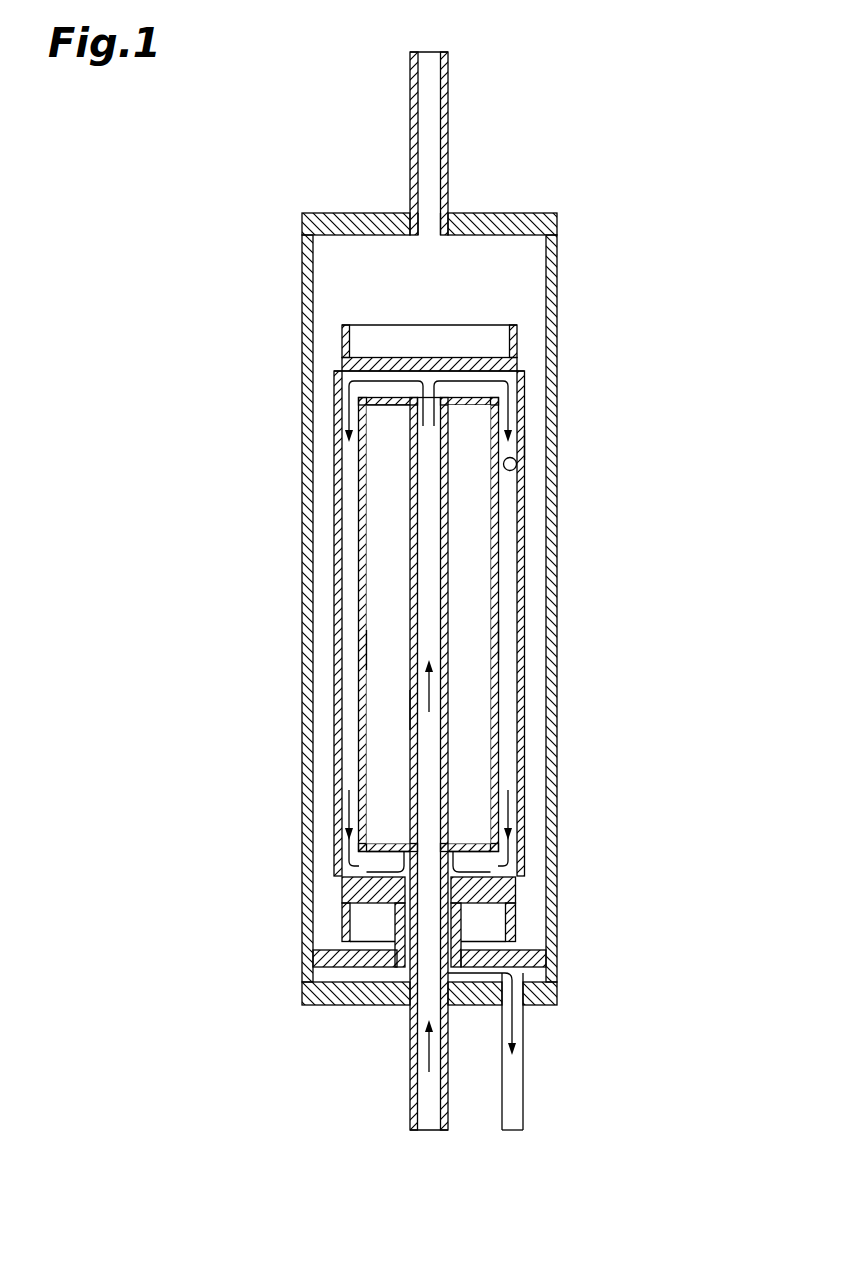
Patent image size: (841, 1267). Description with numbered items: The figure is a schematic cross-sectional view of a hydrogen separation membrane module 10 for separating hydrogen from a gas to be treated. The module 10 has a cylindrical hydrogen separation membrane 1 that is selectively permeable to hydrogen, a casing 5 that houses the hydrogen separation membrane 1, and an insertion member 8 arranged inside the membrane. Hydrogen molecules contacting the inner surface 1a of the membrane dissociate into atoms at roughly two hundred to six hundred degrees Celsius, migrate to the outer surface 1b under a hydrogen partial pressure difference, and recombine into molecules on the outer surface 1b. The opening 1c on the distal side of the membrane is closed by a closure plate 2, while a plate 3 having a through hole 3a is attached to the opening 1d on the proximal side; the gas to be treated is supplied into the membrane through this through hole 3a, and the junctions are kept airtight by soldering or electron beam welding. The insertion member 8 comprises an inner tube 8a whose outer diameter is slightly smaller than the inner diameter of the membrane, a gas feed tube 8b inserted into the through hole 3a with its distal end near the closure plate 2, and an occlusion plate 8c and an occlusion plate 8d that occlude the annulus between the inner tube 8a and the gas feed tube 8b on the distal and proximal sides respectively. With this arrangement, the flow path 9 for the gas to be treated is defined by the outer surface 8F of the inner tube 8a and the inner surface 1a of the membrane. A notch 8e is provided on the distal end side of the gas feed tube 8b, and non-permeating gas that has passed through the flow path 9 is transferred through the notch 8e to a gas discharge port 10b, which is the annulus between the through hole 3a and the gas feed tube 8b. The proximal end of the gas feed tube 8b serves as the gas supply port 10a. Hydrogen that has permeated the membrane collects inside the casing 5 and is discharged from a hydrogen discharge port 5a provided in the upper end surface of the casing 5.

The hydrogen separation membrane module 10 is at (688, 90).
The casing 5 is at (553, 560).
The hydrogen discharge port 5a is at (450, 244).
The closure plate 2 is at (473, 357).
The hydrogen separation membrane 1 is at (523, 397).
The inner surface of hydrogen separation membrane 1a is at (516, 466).
The outer surface of hydrogen separation membrane 1b is at (525, 443).
The opening on distal side 1c is at (348, 392).
The opening on proximal side 1d is at (348, 868).
The flow path 9 is at (505, 517).
The insertion member 8 is at (506, 690).
The outer surface of inner tube 8F is at (498, 640).
The inner tube 8a is at (360, 648).
The gas feed tube 8b is at (412, 708).
The occlusion plate 8c is at (378, 405).
The occlusion plate 8d is at (476, 860).
The notch 8e is at (363, 875).
The plate 3 is at (498, 892).
The through hole 3a is at (377, 935).
The gas discharge port 10b is at (345, 884).
The gas supply port 10a is at (440, 1130).